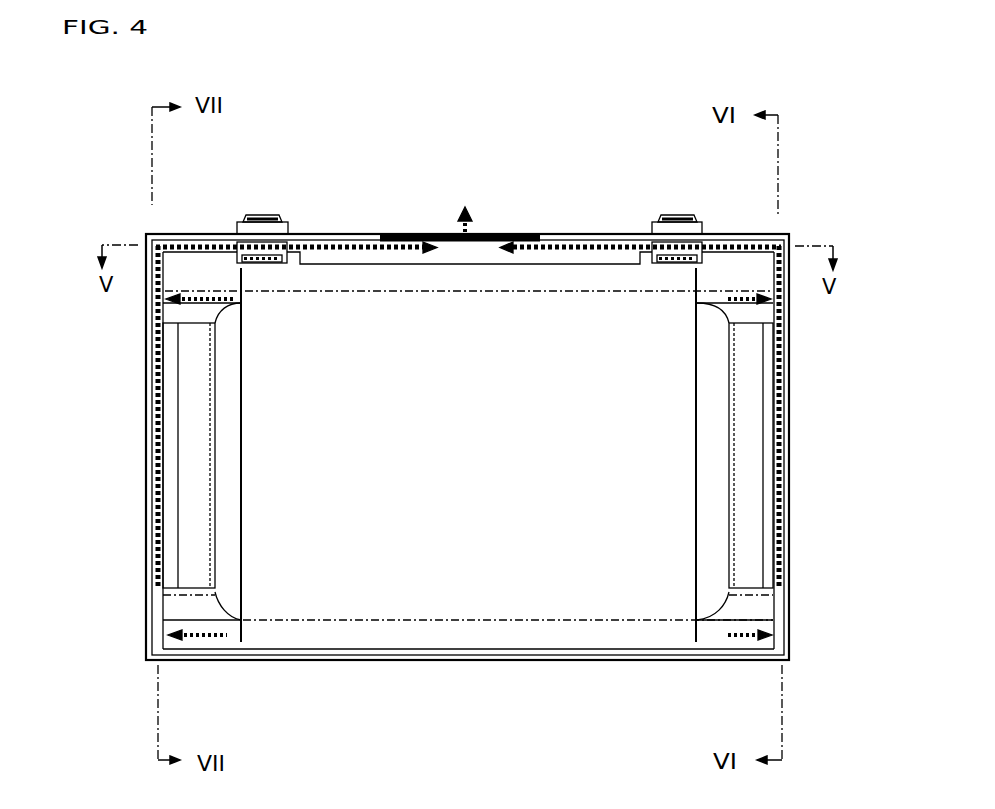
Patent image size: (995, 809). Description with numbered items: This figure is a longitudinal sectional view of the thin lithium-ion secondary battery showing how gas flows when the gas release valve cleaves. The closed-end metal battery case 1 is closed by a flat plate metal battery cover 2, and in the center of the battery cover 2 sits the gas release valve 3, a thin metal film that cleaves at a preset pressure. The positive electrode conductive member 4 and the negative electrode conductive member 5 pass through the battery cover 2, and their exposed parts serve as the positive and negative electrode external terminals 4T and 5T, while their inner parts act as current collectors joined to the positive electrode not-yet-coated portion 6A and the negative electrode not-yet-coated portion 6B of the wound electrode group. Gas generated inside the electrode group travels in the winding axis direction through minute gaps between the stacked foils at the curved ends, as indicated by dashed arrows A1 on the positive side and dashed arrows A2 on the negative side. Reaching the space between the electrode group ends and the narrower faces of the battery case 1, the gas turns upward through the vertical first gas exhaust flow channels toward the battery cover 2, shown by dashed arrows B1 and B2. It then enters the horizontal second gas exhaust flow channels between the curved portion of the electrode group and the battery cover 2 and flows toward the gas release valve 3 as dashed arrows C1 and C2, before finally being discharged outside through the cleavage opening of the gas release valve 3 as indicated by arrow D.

The battery case 1 is at (230, 662).
The battery cover 2 is at (165, 236).
The gas release valve 3 is at (438, 228).
The positive electrode conductive member 4 is at (152, 285).
The negative electrode conductive member 5 is at (780, 284).
The positive electrode external terminal 4T is at (260, 216).
The negative electrode external terminal 5T is at (672, 214).
The positive electrode not-yet-coated portion 6A is at (207, 610).
The negative electrode not-yet-coated portion 6B is at (735, 600).
The dashed arrows A1 is at (200, 302).
The dashed arrows A2 is at (740, 303).
The dashed arrows B1 is at (155, 433).
The dashed arrows B2 is at (786, 452).
The dashed arrows C1 is at (307, 237).
The dashed arrows C2 is at (712, 237).
The arrow D is at (472, 218).